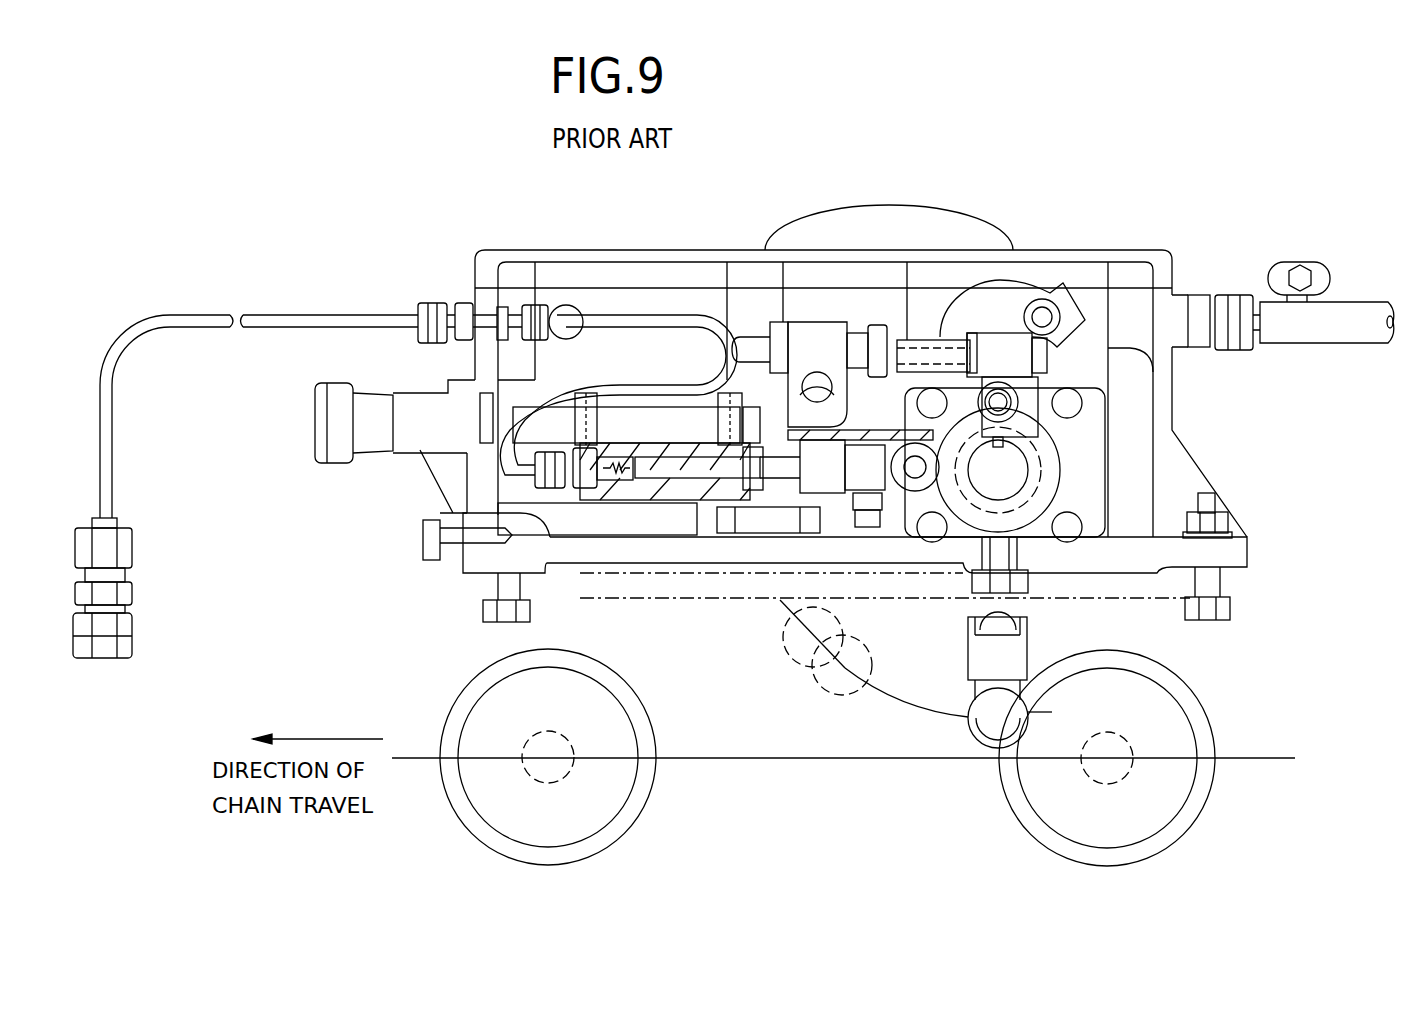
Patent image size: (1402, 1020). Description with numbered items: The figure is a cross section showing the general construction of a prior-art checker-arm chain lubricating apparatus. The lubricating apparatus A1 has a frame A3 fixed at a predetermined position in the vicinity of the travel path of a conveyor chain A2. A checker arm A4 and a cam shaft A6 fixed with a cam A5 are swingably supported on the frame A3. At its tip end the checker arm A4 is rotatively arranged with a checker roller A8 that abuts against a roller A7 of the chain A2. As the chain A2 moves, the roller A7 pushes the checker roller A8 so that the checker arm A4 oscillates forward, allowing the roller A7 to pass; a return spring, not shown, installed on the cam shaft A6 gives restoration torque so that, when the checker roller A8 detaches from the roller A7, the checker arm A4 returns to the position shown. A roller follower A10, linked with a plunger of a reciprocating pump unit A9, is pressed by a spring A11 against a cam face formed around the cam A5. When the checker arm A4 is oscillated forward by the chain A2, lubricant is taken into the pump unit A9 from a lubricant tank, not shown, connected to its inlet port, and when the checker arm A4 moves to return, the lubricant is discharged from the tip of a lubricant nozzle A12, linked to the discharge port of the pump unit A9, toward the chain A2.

The lubricating apparatus A1 is at (1106, 249).
The conveyor chain A2 is at (1293, 758).
The frame A3 is at (1237, 552).
The checker arm A4 is at (1010, 658).
The cam A5 is at (1043, 440).
The cam shaft A6 is at (1012, 470).
The roller A7 is at (1195, 685).
The checker roller A8 is at (968, 742).
The reciprocating pump unit A9 is at (707, 510).
The roller follower A10 is at (897, 470).
The spring A11 is at (800, 535).
The lubricant nozzle A12 is at (128, 578).